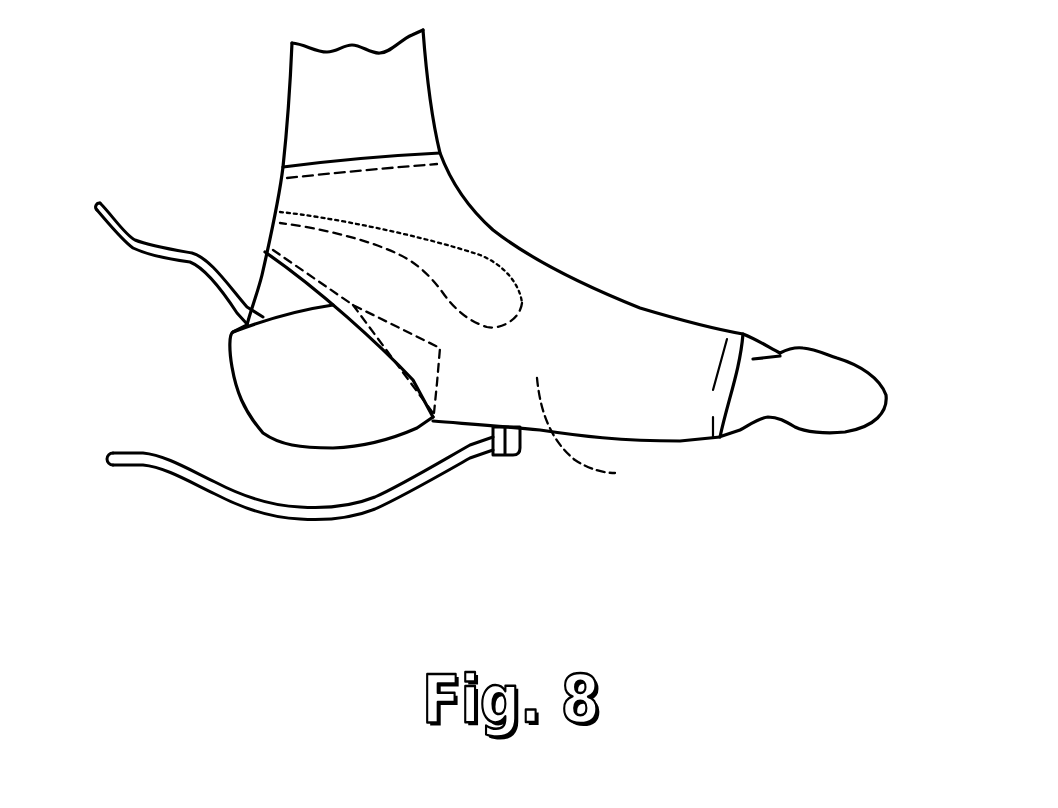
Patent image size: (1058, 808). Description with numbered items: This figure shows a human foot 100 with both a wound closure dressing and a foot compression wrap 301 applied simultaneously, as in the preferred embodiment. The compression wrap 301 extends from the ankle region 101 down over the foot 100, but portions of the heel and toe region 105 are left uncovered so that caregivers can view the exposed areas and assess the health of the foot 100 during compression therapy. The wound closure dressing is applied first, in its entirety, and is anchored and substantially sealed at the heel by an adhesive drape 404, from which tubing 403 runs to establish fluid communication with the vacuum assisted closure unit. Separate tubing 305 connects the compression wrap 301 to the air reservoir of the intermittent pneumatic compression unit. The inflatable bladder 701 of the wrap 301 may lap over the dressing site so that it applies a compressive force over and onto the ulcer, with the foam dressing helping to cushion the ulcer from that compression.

The foot 100 is at (380, 108).
The ankle region 101 is at (277, 288).
The toe region 105 is at (857, 398).
The foot compression wrap 301 is at (423, 202).
The tubing 305 is at (270, 517).
The tubing 403 is at (150, 257).
The adhesive drape 404 is at (260, 378).
The inflatable bladder 701 is at (604, 435).